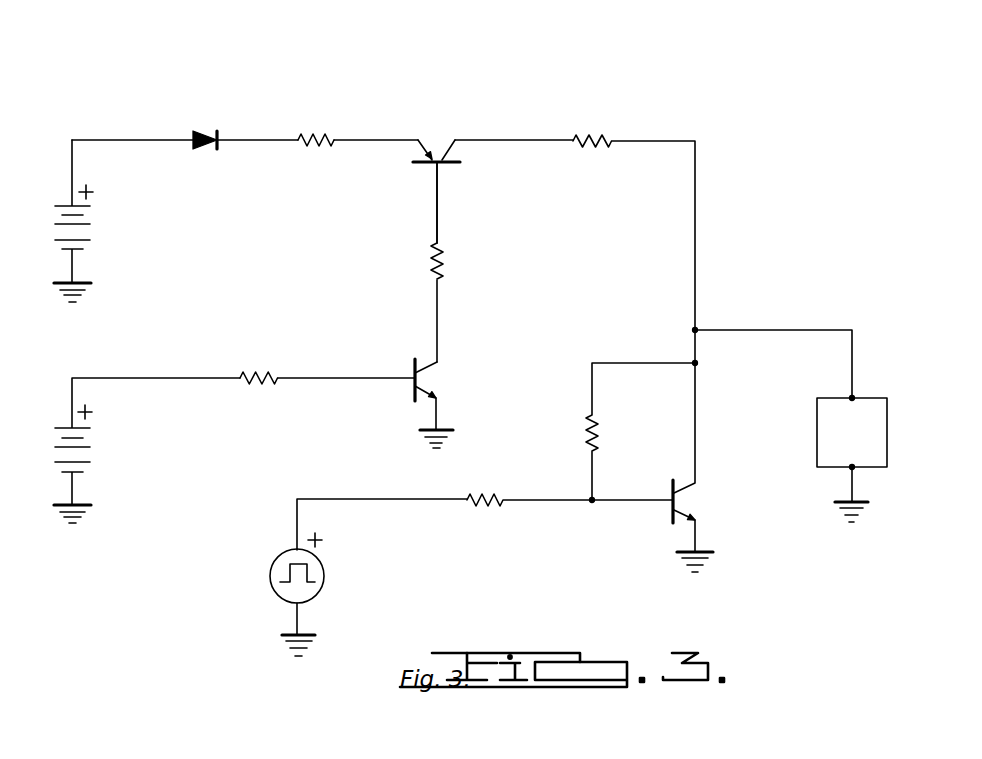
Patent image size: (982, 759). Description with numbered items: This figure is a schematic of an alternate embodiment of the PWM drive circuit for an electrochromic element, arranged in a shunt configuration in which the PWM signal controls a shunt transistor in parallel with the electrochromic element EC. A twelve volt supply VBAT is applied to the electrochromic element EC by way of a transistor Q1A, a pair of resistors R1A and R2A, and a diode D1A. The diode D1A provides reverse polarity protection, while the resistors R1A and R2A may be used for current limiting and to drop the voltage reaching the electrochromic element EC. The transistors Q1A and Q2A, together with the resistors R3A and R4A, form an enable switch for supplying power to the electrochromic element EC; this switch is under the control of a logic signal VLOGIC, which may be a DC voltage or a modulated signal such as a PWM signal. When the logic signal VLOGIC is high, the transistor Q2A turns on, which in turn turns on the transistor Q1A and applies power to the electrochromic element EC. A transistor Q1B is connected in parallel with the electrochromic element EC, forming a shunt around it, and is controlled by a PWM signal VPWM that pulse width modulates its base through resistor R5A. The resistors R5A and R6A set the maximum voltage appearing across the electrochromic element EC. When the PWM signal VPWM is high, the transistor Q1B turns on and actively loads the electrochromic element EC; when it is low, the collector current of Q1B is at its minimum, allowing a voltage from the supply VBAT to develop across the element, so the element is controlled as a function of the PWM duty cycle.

The supply voltage VBAT is at (102, 221).
The diode D1A is at (185, 137).
The resistor R1A is at (304, 137).
The transistor Q1A is at (439, 142).
The resistor R2A is at (627, 218).
The resistor R3A is at (460, 261).
The transistor Q2A is at (468, 402).
The resistor R4A is at (261, 380).
The logic signal VLOGIC is at (147, 450).
The PWM signal VPWM is at (341, 577).
The resistor R5A is at (527, 517).
The resistor R6A is at (616, 432).
The transistor Q1B is at (729, 451).
The electrochromic element EC is at (790, 425).